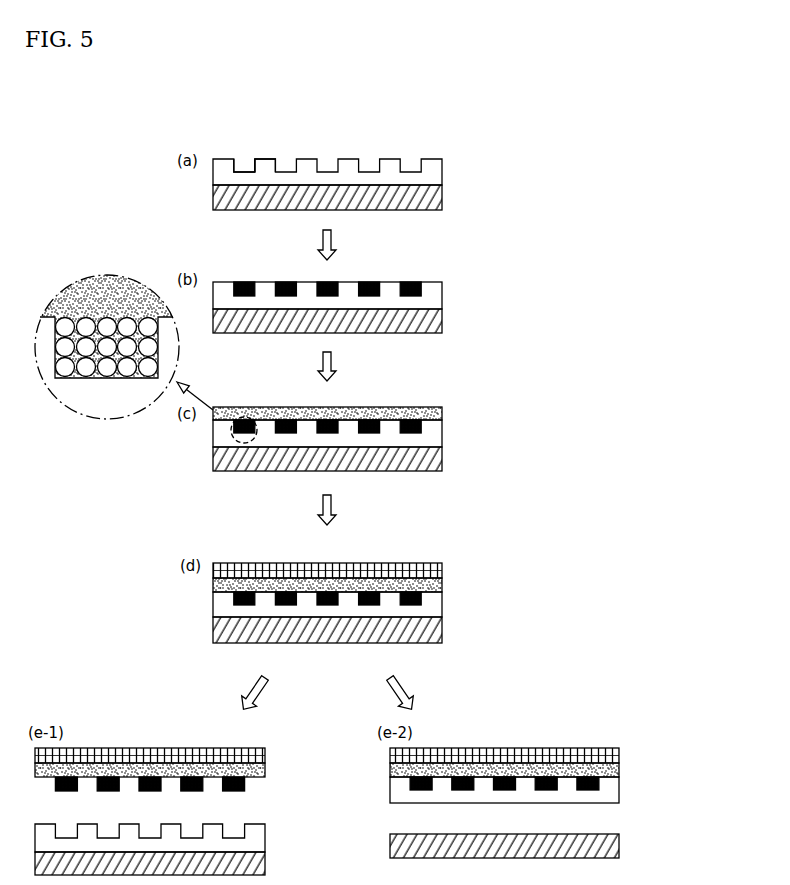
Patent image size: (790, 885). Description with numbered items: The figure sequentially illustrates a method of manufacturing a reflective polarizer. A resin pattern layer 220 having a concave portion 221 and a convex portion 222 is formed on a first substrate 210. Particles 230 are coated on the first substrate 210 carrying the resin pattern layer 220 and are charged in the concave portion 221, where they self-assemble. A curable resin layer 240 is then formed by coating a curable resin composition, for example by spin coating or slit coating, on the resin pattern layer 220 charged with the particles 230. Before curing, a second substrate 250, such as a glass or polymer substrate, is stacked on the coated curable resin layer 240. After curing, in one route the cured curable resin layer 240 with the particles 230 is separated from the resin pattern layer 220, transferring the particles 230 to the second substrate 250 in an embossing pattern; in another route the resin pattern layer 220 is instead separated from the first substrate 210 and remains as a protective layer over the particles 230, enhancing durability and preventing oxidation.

The first substrate 210 is at (442, 196).
The resin pattern layer 220 is at (442, 171).
The concave portion 221 is at (242, 167).
The convex portion 222 is at (265, 158).
The particles 230 is at (355, 515).
The curable resin layer 240 is at (120, 289).
The second substrate 250 is at (443, 566).